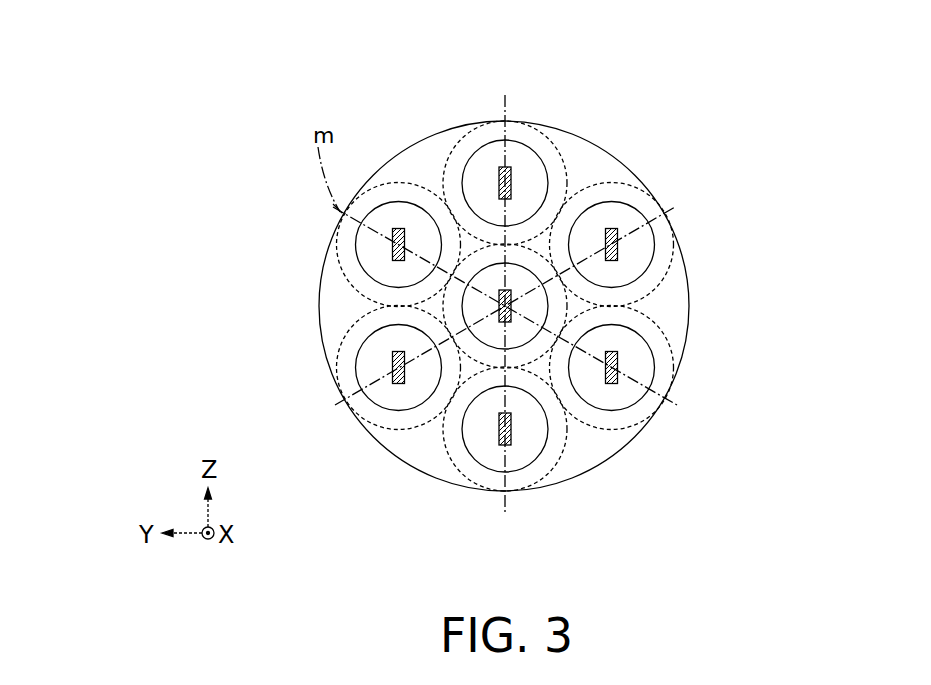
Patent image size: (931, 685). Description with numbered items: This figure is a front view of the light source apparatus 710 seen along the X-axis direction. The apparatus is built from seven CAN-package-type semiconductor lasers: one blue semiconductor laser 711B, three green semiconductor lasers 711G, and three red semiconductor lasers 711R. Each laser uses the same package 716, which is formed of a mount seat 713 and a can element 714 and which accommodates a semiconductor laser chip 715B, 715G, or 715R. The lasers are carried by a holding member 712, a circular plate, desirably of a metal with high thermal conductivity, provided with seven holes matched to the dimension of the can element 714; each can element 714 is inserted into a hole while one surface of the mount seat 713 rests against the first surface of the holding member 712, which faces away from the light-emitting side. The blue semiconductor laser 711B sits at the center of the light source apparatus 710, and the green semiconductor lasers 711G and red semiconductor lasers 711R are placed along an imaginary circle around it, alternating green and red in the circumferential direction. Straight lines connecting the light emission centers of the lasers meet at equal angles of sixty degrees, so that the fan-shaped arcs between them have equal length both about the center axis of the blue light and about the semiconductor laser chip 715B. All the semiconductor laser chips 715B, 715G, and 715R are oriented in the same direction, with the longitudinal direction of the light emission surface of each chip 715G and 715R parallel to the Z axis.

The light source apparatus 710 is at (640, 143).
The green semiconductor laser 711G is at (520, 246).
The red semiconductor laser 711R is at (659, 206).
The blue semiconductor laser 711B is at (555, 322).
The holding member 712 is at (442, 474).
The mount seat 713 is at (532, 137).
The can element 714 is at (528, 177).
The semiconductor laser chip 715G is at (500, 181).
The semiconductor laser chip 715R is at (618, 244).
The semiconductor laser chip 715B is at (511, 305).
The package 716 is at (539, 129).